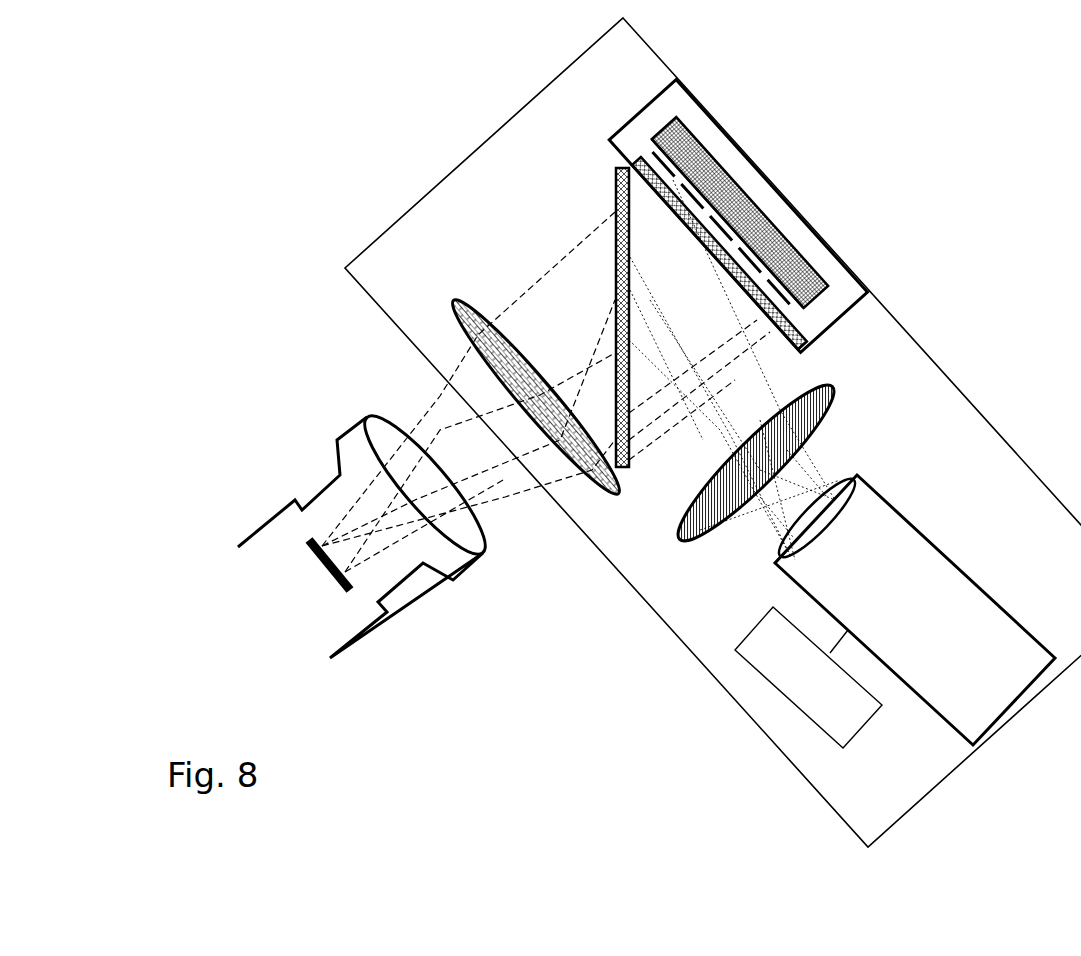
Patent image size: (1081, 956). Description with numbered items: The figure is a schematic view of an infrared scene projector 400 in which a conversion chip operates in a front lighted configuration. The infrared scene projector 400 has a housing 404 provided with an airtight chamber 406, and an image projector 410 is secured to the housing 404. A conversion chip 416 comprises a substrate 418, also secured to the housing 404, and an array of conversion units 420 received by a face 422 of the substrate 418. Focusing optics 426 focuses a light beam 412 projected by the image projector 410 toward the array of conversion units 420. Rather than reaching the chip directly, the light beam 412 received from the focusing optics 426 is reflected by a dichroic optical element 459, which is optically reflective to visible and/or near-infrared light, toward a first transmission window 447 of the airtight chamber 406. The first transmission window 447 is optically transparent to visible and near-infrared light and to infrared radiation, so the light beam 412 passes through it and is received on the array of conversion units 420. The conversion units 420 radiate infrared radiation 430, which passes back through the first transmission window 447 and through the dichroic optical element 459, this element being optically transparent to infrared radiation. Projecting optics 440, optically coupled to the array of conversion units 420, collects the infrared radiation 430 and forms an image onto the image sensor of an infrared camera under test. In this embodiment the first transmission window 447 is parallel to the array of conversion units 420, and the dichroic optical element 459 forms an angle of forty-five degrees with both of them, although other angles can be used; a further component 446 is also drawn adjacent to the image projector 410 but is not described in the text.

The infrared scene projector 400 is at (950, 222).
The housing 404 is at (1013, 445).
The airtight chamber 406 is at (656, 95).
The image projector 410 is at (927, 540).
The light beam 412 is at (802, 473).
The conversion chip 416 is at (800, 241).
The substrate 418 is at (737, 207).
The array of conversion units 420 is at (722, 217).
The face 422 is at (650, 141).
The focusing optics 426 is at (832, 386).
The infrared radiation 430 is at (553, 268).
The projecting optics 440 is at (456, 299).
The controller 446 is at (863, 723).
The first transmission window 447 is at (767, 326).
The dichroic optical element 459 is at (618, 183).